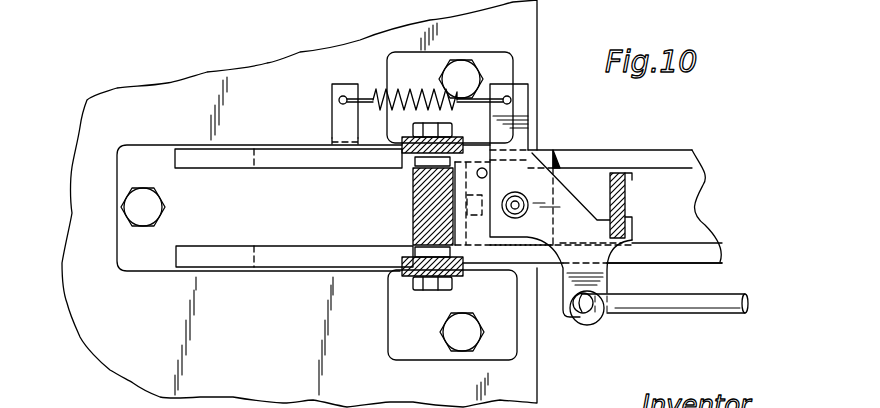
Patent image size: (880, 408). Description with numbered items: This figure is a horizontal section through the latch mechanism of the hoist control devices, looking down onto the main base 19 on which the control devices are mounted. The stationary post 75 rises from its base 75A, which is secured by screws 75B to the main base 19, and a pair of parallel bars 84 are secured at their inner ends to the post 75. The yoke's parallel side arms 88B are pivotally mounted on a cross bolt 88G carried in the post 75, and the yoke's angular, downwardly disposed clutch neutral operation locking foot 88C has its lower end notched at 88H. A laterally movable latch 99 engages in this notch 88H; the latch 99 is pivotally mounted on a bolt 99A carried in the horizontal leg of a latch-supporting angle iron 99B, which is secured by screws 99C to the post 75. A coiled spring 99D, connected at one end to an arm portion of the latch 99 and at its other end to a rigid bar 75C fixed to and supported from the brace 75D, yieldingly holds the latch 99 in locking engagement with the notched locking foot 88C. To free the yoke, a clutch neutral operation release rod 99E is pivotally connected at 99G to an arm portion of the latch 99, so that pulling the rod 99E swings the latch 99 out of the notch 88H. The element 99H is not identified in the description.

The main base 19 is at (205, 73).
The stationary post 75 is at (413, 198).
The post base 75A is at (152, 147).
The screws 75B is at (133, 200).
The rigid bar 75C is at (333, 90).
The brace 75D is at (278, 157).
The parallel bars 84 is at (685, 160).
The side arms 88B is at (403, 143).
The clutch neutral operation locking foot 88C is at (630, 178).
The cross bolt 88G is at (413, 222).
The notch 88H is at (623, 215).
The latch 99 is at (562, 200).
The bolt 99A is at (512, 217).
The latch-supporting angle iron 99B is at (503, 248).
The screws 99C is at (475, 217).
The coiled spring 99D is at (378, 90).
The clutch neutral operation release rod 99E is at (668, 298).
The pivotal connection 99G is at (568, 320).
The hole 99H is at (487, 173).